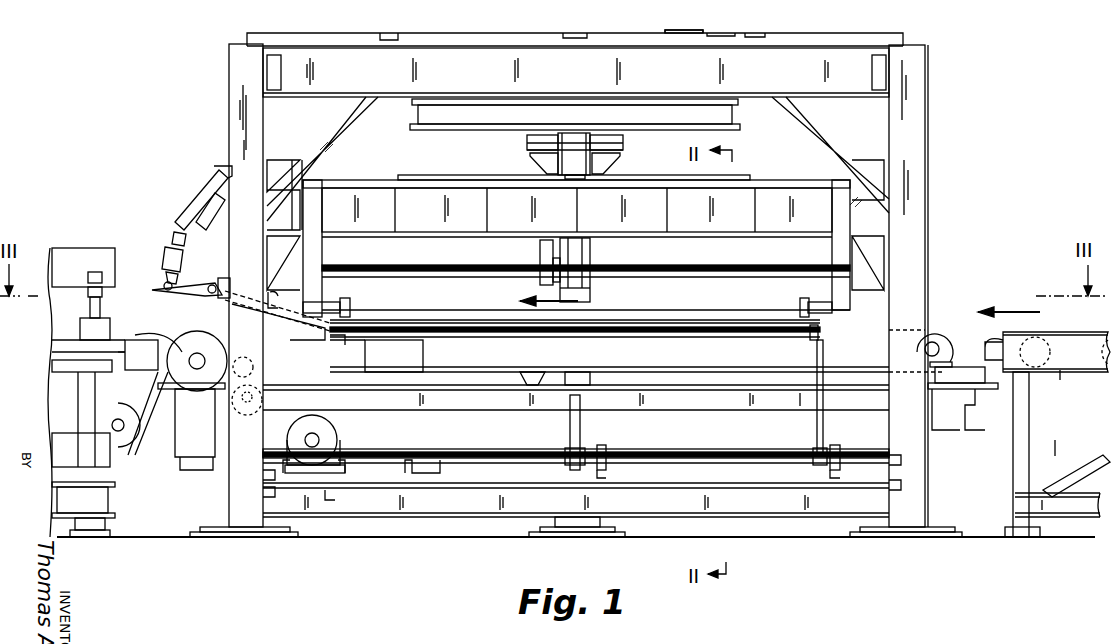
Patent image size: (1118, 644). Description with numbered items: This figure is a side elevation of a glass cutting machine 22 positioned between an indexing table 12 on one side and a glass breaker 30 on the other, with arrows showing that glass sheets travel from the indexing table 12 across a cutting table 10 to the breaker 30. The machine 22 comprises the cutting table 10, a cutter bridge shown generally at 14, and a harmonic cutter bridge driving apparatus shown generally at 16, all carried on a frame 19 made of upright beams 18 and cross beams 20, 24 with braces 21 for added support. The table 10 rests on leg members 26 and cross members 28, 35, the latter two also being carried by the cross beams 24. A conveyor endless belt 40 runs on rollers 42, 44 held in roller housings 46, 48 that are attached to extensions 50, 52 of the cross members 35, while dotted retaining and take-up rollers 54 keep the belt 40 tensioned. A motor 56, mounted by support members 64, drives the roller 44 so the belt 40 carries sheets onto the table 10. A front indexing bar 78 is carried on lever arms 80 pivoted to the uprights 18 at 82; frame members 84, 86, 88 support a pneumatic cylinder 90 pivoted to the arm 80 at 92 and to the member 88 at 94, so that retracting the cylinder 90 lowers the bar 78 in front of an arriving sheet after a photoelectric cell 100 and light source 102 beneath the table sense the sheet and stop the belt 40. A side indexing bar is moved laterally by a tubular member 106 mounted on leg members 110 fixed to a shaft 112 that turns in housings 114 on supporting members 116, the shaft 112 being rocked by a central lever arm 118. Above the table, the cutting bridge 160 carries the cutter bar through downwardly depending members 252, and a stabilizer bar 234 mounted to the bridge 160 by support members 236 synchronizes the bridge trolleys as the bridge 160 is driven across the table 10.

The cutting table 10 is at (779, 304).
The indexing table 12 is at (1094, 326).
The cutter bridge 14 is at (372, 182).
The harmonic cutter bridge driving apparatus 16 is at (527, 150).
The upright beams 18 is at (228, 86).
The frame 19 is at (636, 45).
The cross beams 20 is at (456, 66).
The braces 21 is at (338, 132).
The cutting machine 22 is at (930, 165).
The cross beams 24 is at (228, 464).
The leg members 26 is at (598, 432).
The cross members 28 is at (482, 508).
The glass breaker 30 is at (98, 250).
The cross members 35 is at (460, 412).
The endless belt 40 is at (840, 338).
The roller 42 is at (928, 338).
The roller 44 is at (192, 338).
The roller housing 46 is at (950, 350).
The roller housing 48 is at (166, 345).
The extension 50 is at (172, 420).
The extension 52 is at (968, 418).
The retaining and take-up rollers 54 is at (247, 378).
The motor 56 is at (330, 437).
The support members 64 is at (290, 478).
The indexing bar 78 is at (330, 324).
The lever arms 80 is at (292, 316).
The pivot 82 is at (210, 294).
The frame member 84 is at (190, 196).
The frame member 86 is at (215, 180).
The frame member 88 is at (204, 232).
The pneumatic cylinder 90 is at (165, 254).
The pivot 92 is at (168, 290).
The pivot 94 is at (176, 234).
The photoelectric cell 100 is at (375, 352).
The light source 102 is at (415, 350).
The tubular member 106 is at (724, 328).
The leg members 110 is at (817, 433).
The shaft 112 is at (704, 450).
The housings 114 is at (600, 452).
The supporting members 116 is at (606, 474).
The lever arm 118 is at (570, 433).
The cutting bridge 160 is at (812, 175).
The stabilizer bar 234 is at (742, 272).
The support members 236 is at (540, 262).
The downwardly depending members 252 is at (590, 295).